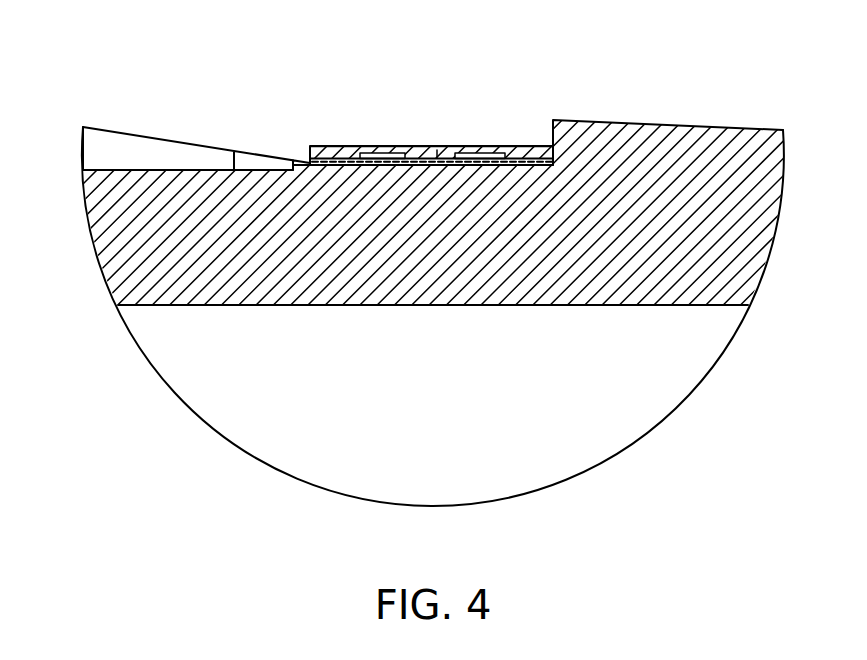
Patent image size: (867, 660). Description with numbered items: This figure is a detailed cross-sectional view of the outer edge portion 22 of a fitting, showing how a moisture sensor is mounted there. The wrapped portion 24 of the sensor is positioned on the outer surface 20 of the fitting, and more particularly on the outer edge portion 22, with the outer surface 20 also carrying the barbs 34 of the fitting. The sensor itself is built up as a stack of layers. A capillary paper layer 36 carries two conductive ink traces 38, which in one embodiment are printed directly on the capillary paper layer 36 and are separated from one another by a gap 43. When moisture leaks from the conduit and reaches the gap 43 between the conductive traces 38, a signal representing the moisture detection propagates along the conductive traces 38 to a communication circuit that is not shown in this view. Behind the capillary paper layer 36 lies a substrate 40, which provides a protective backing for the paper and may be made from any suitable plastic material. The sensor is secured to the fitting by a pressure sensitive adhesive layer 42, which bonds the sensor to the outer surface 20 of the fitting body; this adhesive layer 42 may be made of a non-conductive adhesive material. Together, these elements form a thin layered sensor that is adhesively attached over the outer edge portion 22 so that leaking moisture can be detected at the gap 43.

The outer surface 20 is at (150, 255).
The outer edge portion 22 is at (680, 140).
The wrapped portion 24 is at (365, 147).
The barbs 34 is at (100, 137).
The capillary paper layer 36 is at (337, 146).
The conductive ink traces 38 is at (397, 158).
The substrate 40 is at (525, 158).
The pressure sensitive adhesive layer 42 is at (545, 167).
The gap 43 is at (437, 152).